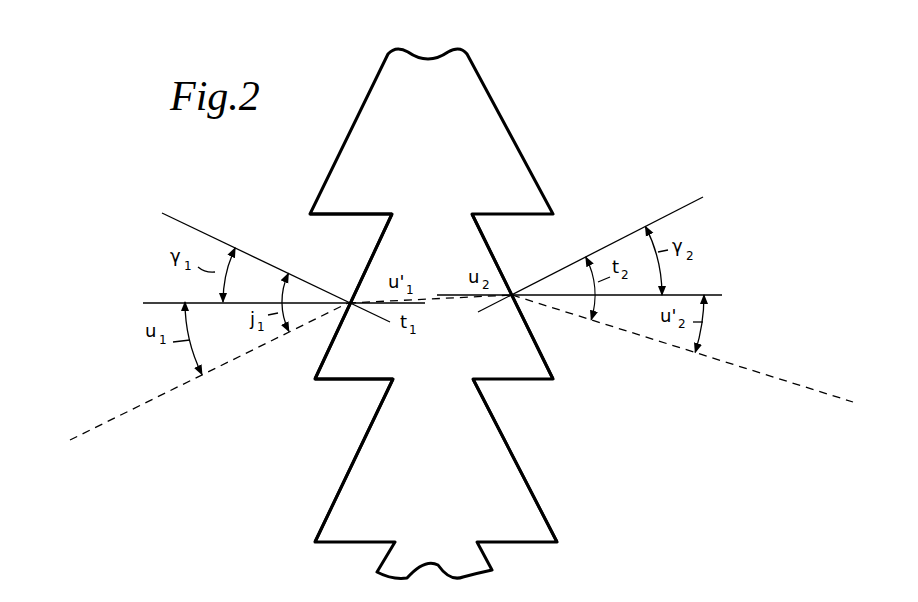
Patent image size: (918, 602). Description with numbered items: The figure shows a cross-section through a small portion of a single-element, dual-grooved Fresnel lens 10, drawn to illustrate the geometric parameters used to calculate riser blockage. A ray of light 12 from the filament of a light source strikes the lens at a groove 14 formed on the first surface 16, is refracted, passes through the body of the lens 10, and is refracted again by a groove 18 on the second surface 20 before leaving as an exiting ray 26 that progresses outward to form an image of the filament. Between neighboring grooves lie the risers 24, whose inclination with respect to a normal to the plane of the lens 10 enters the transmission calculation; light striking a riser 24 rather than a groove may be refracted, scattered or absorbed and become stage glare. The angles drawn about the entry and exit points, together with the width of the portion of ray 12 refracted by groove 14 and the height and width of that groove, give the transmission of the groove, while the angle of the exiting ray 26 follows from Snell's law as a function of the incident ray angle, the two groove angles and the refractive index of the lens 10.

The Fresnel lens 10 is at (558, 95).
The ray of light 12 is at (158, 402).
The groove 14 is at (368, 262).
The first surface 16 is at (327, 505).
The groove 18 is at (492, 249).
The second surface 20 is at (528, 463).
The riser 24 is at (332, 217).
The exiting ray 26 is at (733, 365).